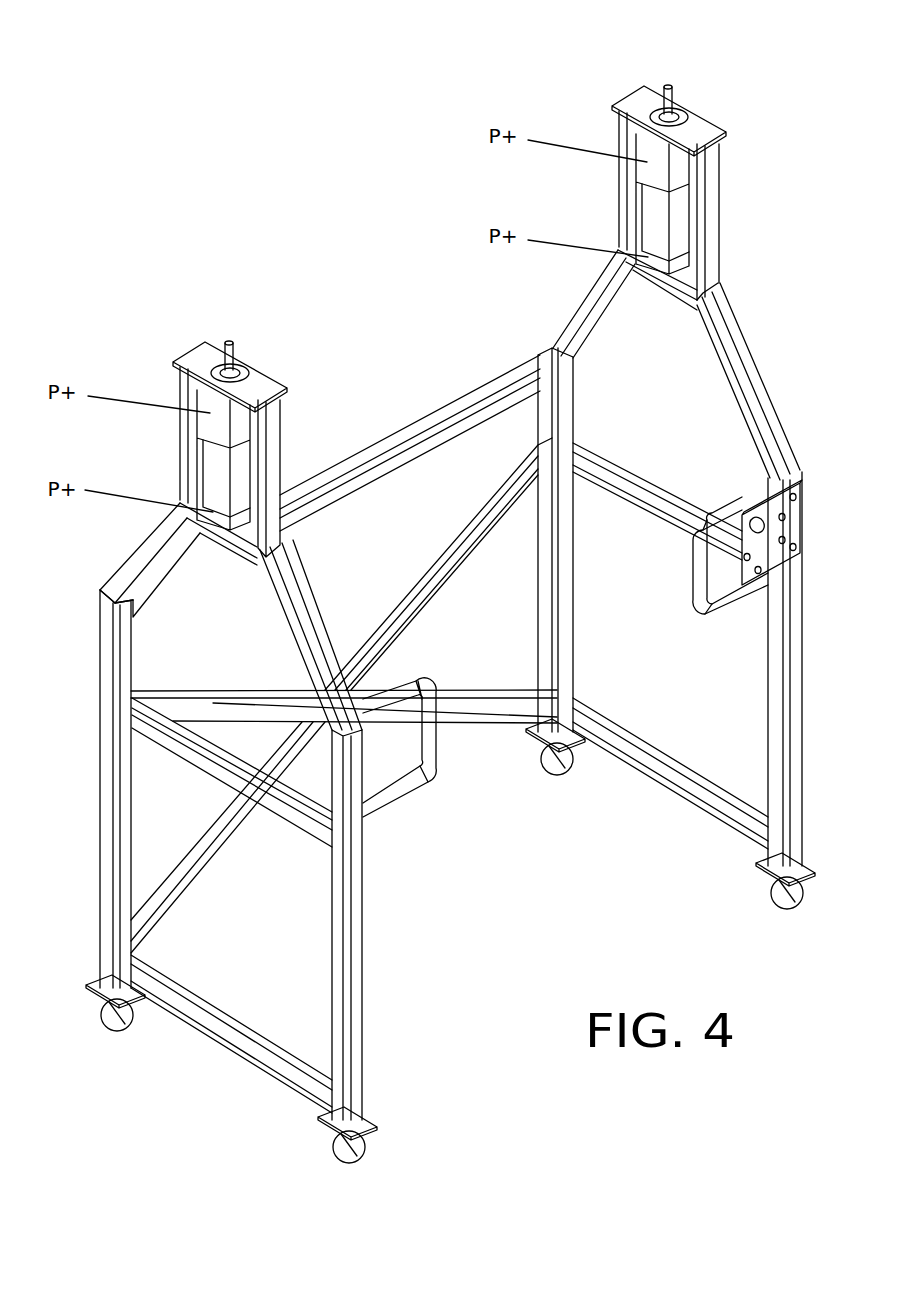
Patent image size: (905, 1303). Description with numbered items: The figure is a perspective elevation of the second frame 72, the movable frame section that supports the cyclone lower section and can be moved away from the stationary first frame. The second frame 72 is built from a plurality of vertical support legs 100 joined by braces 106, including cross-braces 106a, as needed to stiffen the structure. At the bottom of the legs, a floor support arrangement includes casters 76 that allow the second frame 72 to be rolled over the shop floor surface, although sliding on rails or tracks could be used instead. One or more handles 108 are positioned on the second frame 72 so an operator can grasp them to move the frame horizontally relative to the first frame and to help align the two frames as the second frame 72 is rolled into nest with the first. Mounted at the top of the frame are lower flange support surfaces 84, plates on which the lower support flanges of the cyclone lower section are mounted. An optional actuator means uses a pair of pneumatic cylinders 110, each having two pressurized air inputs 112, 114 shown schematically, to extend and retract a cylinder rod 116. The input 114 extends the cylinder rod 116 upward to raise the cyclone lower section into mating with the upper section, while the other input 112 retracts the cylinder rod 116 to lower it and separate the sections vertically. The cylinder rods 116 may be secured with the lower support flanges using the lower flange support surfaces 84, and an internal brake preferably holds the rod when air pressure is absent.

The second frame 72 is at (90, 852).
The casters 76 is at (555, 773).
The lower flange support surfaces 84 is at (265, 377).
The vertical support legs 100 is at (567, 600).
The braces 106 is at (493, 372).
The cross-braces 106a is at (456, 558).
The handles 108 is at (728, 600).
The pneumatic cylinder 110 is at (183, 429).
The pressurized air input 112 is at (151, 396).
The pressurized air input 114 is at (147, 504).
The cylinder rod 116 is at (235, 344).